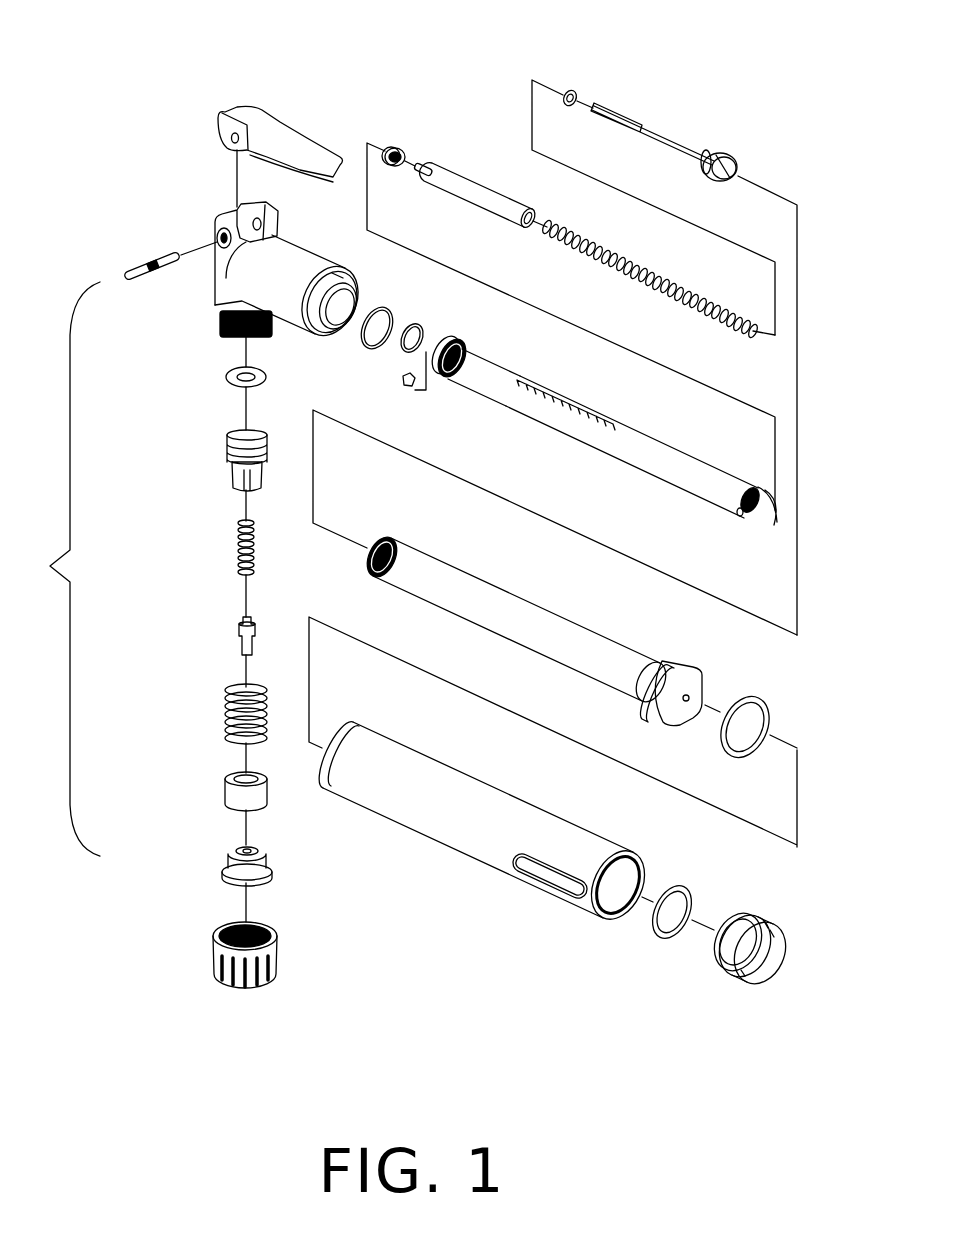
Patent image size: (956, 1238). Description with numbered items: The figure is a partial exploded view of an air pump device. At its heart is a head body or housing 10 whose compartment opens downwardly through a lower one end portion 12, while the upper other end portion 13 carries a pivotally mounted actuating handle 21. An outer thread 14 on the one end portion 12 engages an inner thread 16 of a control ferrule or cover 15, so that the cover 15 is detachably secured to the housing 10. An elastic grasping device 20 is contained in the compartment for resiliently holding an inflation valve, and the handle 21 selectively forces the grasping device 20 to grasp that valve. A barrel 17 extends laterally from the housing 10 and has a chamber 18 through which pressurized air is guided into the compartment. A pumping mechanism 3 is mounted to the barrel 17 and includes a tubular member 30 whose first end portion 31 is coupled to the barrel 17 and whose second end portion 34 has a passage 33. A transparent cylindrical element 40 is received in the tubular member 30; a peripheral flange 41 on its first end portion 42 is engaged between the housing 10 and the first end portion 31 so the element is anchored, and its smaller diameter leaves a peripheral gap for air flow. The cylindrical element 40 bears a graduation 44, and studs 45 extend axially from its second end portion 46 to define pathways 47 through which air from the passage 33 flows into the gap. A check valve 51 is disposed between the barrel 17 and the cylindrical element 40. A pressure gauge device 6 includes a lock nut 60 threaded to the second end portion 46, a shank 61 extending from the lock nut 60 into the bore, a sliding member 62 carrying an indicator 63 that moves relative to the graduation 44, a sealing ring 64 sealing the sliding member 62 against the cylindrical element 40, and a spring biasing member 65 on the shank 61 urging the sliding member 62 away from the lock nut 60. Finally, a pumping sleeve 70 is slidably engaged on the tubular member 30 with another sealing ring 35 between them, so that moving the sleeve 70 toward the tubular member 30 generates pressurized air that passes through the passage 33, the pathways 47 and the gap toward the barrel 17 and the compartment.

The pumping mechanism 3 is at (710, 822).
The pressure gauge device 6 is at (630, 98).
The housing 10 is at (280, 257).
The one end portion 12 is at (220, 320).
The other end portion 13 is at (215, 223).
The outer thread 14 is at (233, 338).
The cover 15 is at (270, 960).
The inner thread 16 is at (257, 927).
The barrel 17 is at (303, 263).
The chamber 18 is at (348, 297).
The grasping device 20 is at (212, 476).
The handle 21 is at (287, 153).
The tubular member 30 is at (508, 607).
The first end portion 31 is at (377, 537).
The passage 33 is at (689, 697).
The second end portion 34 is at (650, 667).
The sealing ring 35 is at (768, 707).
The cylindrical element 40 is at (640, 453).
The flange 41 is at (448, 345).
The first end portion 42 is at (478, 363).
The graduation 44 is at (557, 390).
The studs 45 is at (775, 505).
The second end portion 46 is at (730, 482).
The pathways 47 is at (742, 513).
The check valve 51 is at (402, 378).
The lock nut 60 is at (718, 157).
The shank 61 is at (657, 137).
The sliding member 62 is at (483, 195).
The indicator 63 is at (422, 165).
The sealing ring 64 is at (390, 147).
The spring biasing member 65 is at (600, 255).
The sleeve 70 is at (417, 813).